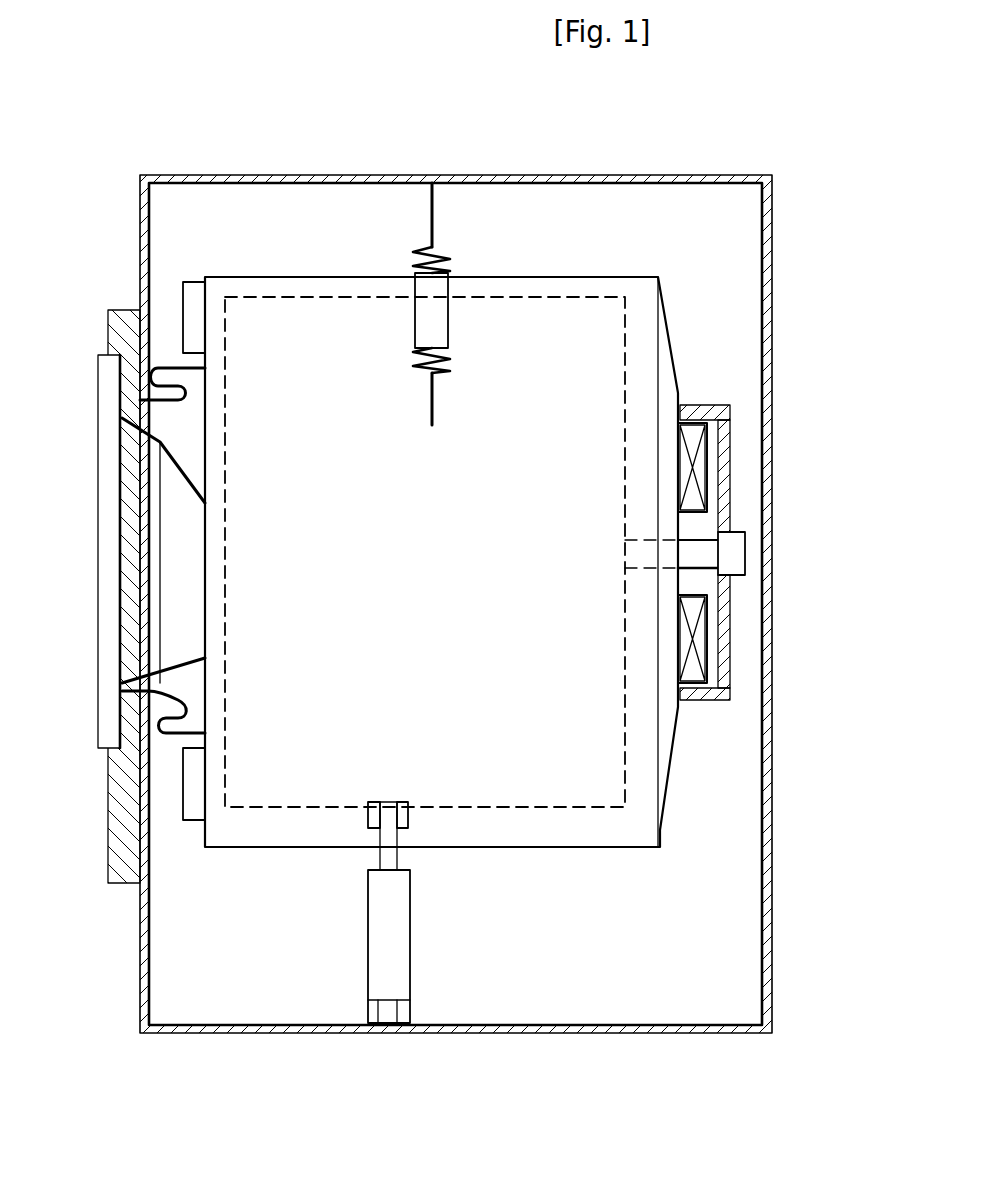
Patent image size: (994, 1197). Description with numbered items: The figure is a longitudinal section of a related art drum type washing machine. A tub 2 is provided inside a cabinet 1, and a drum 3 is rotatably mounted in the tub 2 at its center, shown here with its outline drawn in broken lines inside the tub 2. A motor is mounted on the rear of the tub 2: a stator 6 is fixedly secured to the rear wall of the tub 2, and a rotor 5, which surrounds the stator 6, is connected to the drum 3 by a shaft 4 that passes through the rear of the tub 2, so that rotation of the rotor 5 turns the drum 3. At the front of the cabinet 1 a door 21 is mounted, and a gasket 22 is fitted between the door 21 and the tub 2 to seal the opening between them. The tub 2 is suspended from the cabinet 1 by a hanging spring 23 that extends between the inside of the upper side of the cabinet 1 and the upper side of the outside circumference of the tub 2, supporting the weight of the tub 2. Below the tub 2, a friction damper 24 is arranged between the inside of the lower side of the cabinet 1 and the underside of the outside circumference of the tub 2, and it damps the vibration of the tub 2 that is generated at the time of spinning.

The cabinet 1 is at (233, 178).
The tub 2 is at (566, 278).
The drum 3 is at (326, 292).
The shaft 4 is at (698, 552).
The rotor 5 is at (725, 647).
The stator 6 is at (698, 468).
The door 21 is at (107, 565).
The gasket 22 is at (173, 735).
The hanging spring 23 is at (441, 250).
The friction damper 24 is at (393, 943).